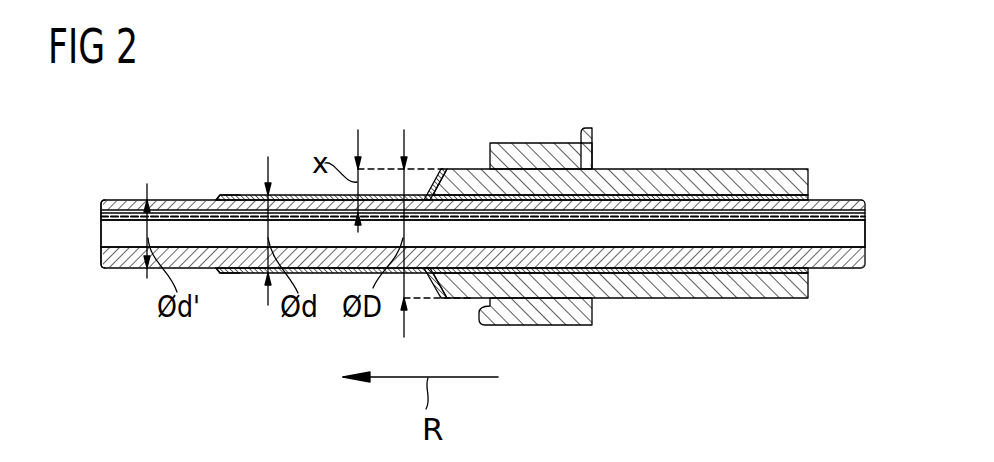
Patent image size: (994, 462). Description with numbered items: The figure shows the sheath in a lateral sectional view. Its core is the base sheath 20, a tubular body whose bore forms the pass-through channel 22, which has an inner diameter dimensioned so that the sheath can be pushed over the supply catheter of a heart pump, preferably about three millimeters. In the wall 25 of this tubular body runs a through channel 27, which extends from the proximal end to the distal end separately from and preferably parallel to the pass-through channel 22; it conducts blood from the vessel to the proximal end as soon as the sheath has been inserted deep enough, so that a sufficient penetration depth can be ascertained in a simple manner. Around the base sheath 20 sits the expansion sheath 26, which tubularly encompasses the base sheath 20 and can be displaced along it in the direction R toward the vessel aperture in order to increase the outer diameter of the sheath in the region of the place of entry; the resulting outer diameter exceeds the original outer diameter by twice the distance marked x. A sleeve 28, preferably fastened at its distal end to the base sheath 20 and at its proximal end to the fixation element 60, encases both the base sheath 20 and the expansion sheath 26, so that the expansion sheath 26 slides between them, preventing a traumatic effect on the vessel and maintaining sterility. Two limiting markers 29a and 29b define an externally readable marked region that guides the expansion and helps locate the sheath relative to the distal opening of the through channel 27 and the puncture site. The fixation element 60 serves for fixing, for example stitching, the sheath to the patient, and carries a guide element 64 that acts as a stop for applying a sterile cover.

The base sheath 20 is at (157, 200).
The pass-through channel 22 is at (100, 228).
The wall 25 is at (113, 200).
The through channel 27 is at (101, 208).
The sleeve 28 is at (233, 268).
The limiting marker 29a is at (205, 200).
The limiting marker 29b is at (428, 190).
The expansion sheath 26 is at (680, 169).
The fixation element 60 is at (528, 143).
The guide element 64 is at (587, 128).